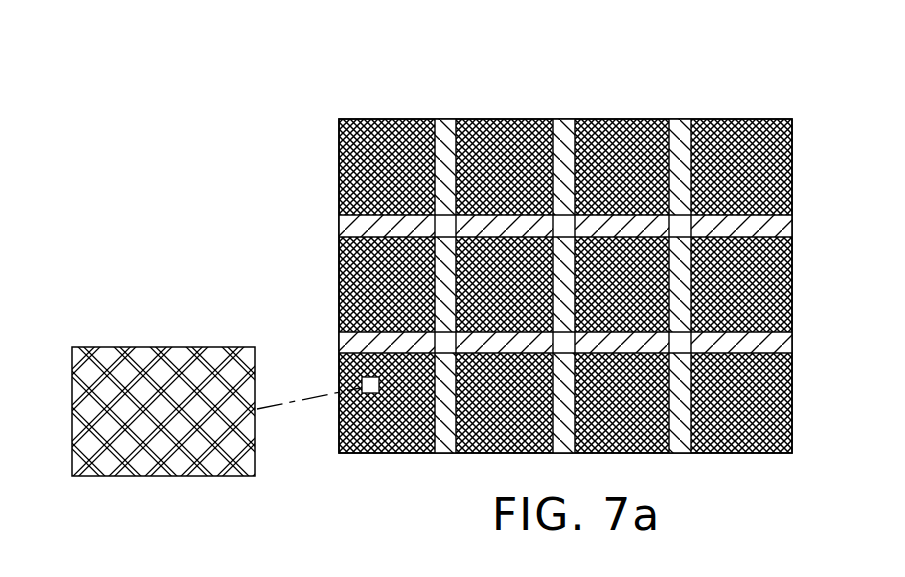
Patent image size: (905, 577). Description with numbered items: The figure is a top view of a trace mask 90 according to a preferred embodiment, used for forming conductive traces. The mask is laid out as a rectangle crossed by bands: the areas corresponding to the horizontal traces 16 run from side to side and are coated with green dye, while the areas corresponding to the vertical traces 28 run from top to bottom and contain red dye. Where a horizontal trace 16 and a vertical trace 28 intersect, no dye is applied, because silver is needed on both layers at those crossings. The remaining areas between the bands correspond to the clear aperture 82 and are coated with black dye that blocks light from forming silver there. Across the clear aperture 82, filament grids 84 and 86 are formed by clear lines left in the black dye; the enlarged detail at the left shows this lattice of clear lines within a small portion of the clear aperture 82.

The trace mask 90 is at (532, 227).
The clear aperture 82 is at (392, 135).
The vertical traces 28 is at (448, 127).
The horizontal traces 16 is at (341, 222).
The filament grid 84 is at (216, 368).
The filament grid 86 is at (172, 350).